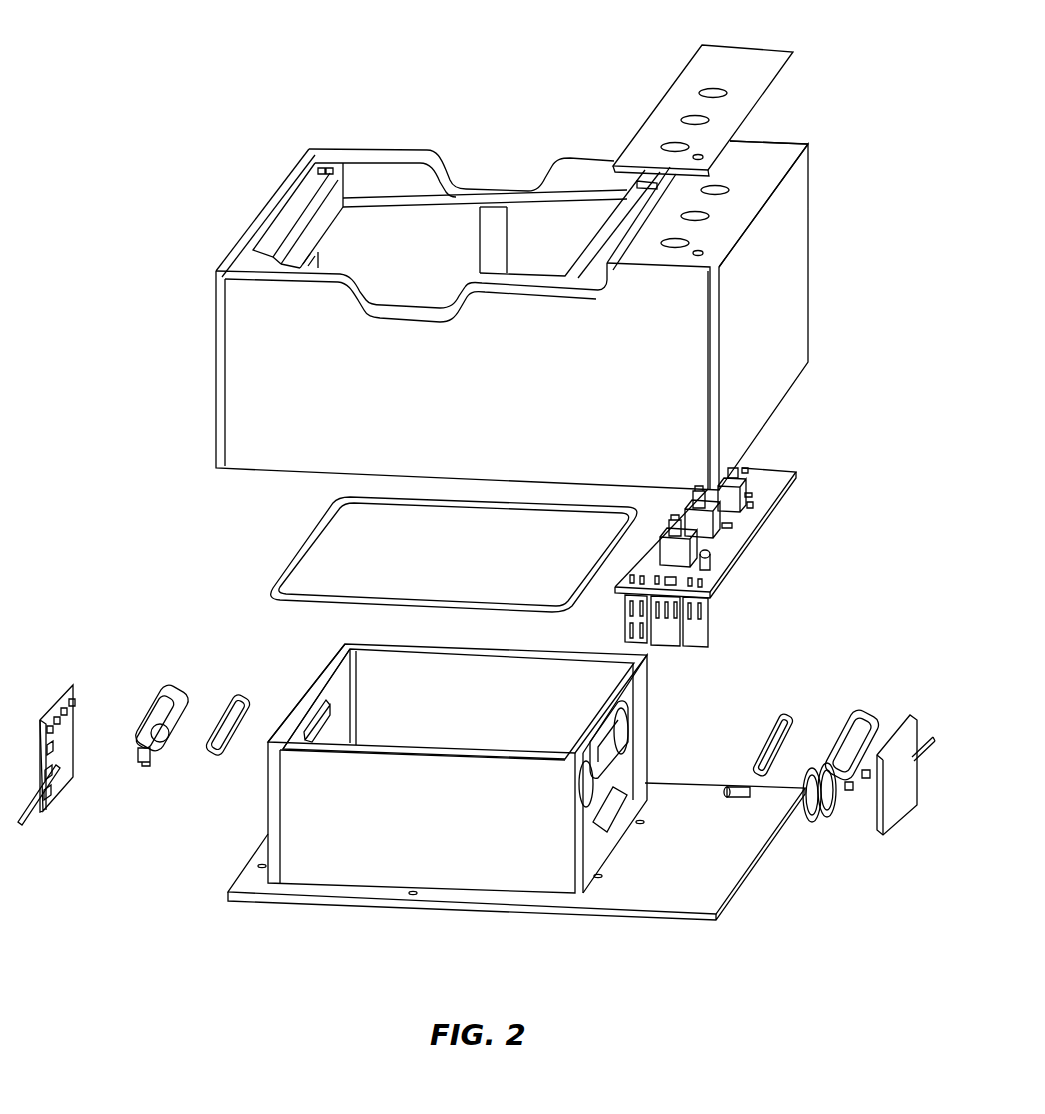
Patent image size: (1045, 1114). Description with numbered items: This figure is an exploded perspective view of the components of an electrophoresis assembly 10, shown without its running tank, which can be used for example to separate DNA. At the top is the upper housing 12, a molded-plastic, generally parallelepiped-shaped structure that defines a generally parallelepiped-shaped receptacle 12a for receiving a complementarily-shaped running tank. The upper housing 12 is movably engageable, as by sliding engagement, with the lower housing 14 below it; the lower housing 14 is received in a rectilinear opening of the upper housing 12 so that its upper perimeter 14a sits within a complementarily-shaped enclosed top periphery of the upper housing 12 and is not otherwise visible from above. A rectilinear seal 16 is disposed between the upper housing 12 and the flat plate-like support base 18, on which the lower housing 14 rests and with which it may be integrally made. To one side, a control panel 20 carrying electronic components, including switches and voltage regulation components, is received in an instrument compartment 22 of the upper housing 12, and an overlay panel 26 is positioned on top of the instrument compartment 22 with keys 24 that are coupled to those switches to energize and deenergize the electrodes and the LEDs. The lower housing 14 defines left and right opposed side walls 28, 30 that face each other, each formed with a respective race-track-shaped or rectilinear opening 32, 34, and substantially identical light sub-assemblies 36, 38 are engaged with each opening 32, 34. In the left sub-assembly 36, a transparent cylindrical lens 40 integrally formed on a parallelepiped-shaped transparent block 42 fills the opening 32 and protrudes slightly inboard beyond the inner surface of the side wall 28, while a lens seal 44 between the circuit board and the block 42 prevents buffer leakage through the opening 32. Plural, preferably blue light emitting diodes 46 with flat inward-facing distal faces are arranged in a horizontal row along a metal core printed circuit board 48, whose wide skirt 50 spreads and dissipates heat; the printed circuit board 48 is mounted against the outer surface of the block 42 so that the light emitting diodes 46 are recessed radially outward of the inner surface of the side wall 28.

The assembly 10 is at (300, 86).
The upper housing 12 is at (828, 190).
The receptacle 12a is at (458, 228).
The lower housing 14 is at (488, 665).
The upper perimeter 14a is at (428, 752).
The rectilinear seal 16 is at (298, 549).
The support base 18 is at (645, 893).
The control panel 20 is at (768, 485).
The instrument compartment 22 is at (782, 280).
The keys 24 is at (712, 92).
The overlay panel 26 is at (752, 60).
The left side wall 28 is at (310, 692).
The right side wall 30 is at (628, 698).
The left opening 32 is at (332, 712).
The right opening 34 is at (615, 728).
The left light sub-assembly 36 is at (128, 838).
The right light sub-assembly 38 is at (849, 684).
The cylindrical lens 40 is at (168, 722).
The transparent block 42 is at (165, 700).
The lens seal 44 is at (232, 708).
The light emitting diodes 46 is at (78, 702).
The metal core printed circuit board 48 is at (57, 700).
The skirt 50 is at (65, 755).